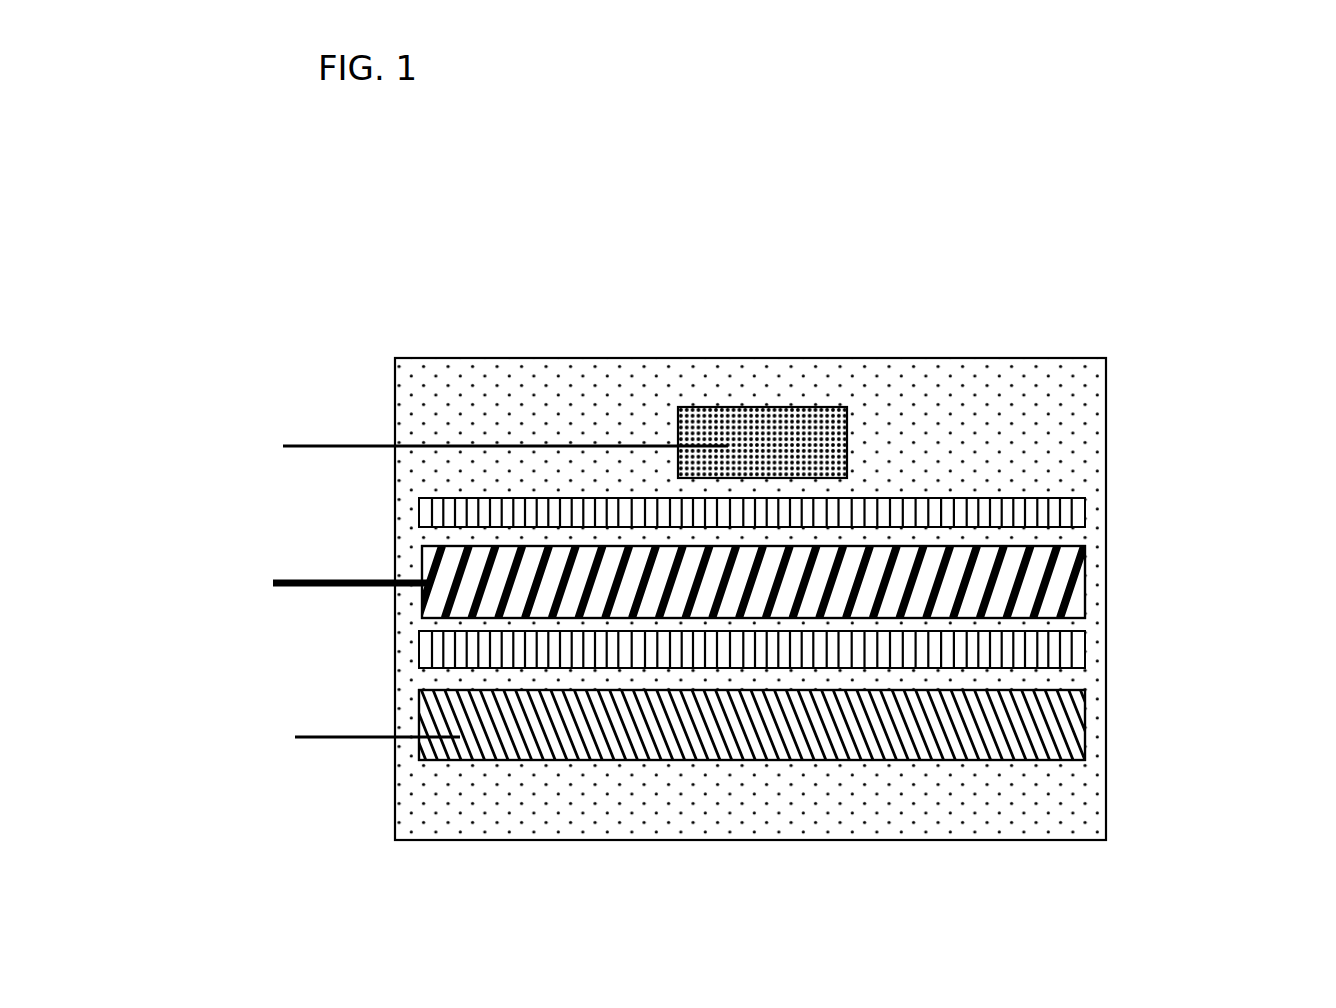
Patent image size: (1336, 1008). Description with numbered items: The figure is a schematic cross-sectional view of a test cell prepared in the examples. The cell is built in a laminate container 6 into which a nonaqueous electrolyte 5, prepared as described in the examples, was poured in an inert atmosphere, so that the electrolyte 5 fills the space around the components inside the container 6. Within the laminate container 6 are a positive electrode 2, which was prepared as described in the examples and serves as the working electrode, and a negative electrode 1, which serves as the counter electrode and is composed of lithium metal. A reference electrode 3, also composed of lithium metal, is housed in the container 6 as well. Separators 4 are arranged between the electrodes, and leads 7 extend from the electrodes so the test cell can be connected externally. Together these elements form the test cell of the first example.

The negative electrode 1 is at (1038, 715).
The positive electrode 2 is at (1057, 590).
The reference electrode 3 is at (750, 426).
The separators 4 is at (1076, 520).
The nonaqueous electrolyte 5 is at (970, 427).
The laminate container 6 is at (442, 358).
The leads 7 is at (295, 737).